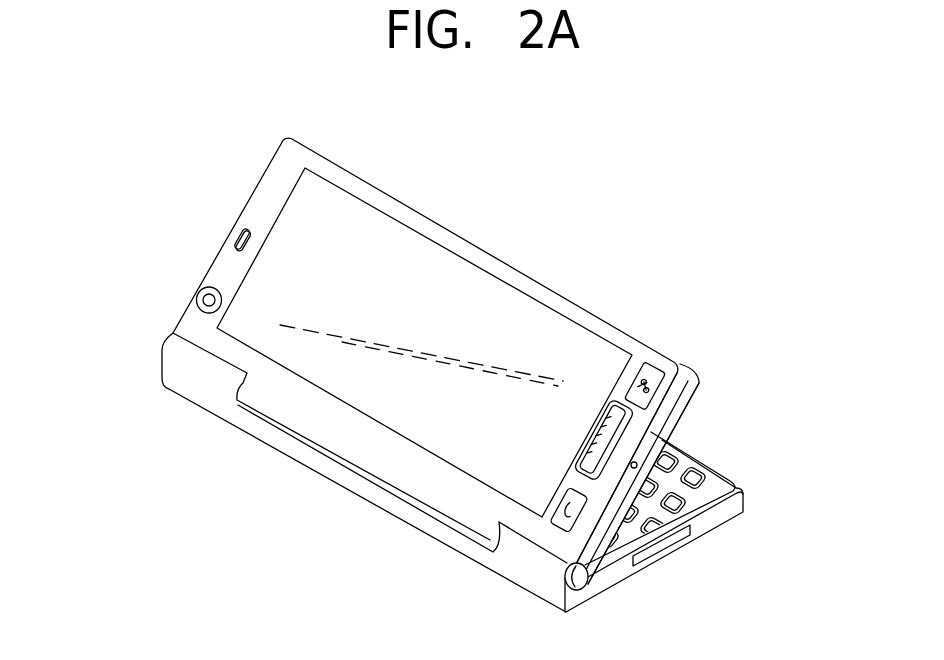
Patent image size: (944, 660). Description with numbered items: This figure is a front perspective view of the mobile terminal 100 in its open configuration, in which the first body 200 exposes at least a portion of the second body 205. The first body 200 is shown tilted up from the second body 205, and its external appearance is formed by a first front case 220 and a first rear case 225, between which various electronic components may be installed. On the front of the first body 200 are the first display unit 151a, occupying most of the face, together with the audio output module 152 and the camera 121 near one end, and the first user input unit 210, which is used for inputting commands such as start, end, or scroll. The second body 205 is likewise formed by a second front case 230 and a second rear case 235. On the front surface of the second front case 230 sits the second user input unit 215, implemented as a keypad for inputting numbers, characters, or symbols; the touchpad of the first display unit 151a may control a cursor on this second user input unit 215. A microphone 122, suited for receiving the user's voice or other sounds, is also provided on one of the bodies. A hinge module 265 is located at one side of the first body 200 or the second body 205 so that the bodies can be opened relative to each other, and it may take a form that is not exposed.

The mobile terminal 100 is at (608, 208).
The first display unit 151a is at (413, 251).
The audio output module 152 is at (239, 234).
The camera 121 is at (204, 296).
The first user input unit 210 is at (648, 366).
The first front case 220 is at (684, 376).
The first rear case 225 is at (696, 380).
The first body 200 is at (710, 409).
The microphone 122 is at (639, 464).
The second user input unit 215 is at (706, 481).
The second front case 230 is at (730, 505).
The second rear case 235 is at (710, 530).
The second body 205 is at (701, 569).
The hinge module 265 is at (578, 579).